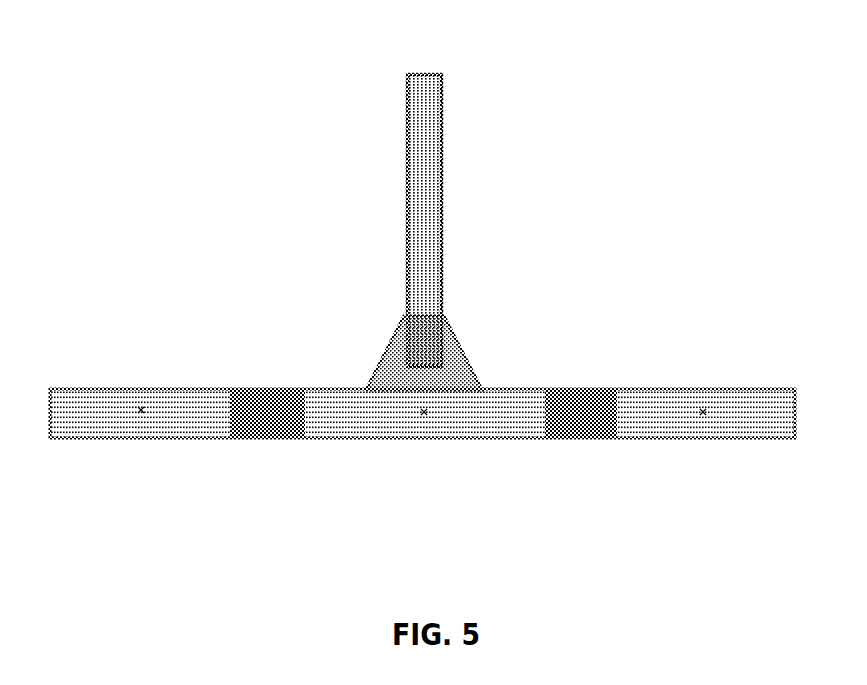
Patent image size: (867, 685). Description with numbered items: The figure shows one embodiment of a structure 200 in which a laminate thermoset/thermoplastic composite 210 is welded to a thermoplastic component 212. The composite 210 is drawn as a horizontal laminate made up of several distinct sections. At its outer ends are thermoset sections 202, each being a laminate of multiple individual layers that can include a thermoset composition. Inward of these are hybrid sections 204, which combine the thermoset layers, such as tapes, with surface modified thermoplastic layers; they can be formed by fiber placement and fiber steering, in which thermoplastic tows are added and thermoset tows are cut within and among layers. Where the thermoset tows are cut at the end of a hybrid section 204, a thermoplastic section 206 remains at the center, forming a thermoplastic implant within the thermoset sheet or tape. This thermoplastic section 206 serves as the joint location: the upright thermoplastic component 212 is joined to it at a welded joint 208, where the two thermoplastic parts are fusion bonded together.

The structure 200 is at (614, 58).
The thermoset sections 202 is at (141, 408).
The hybrid sections 204 is at (253, 439).
The thermoplastic section 206 is at (424, 415).
The welded joint 208 is at (461, 340).
The laminate thermoset/thermoplastic composite 210 is at (634, 447).
The thermoplastic component 212 is at (406, 222).